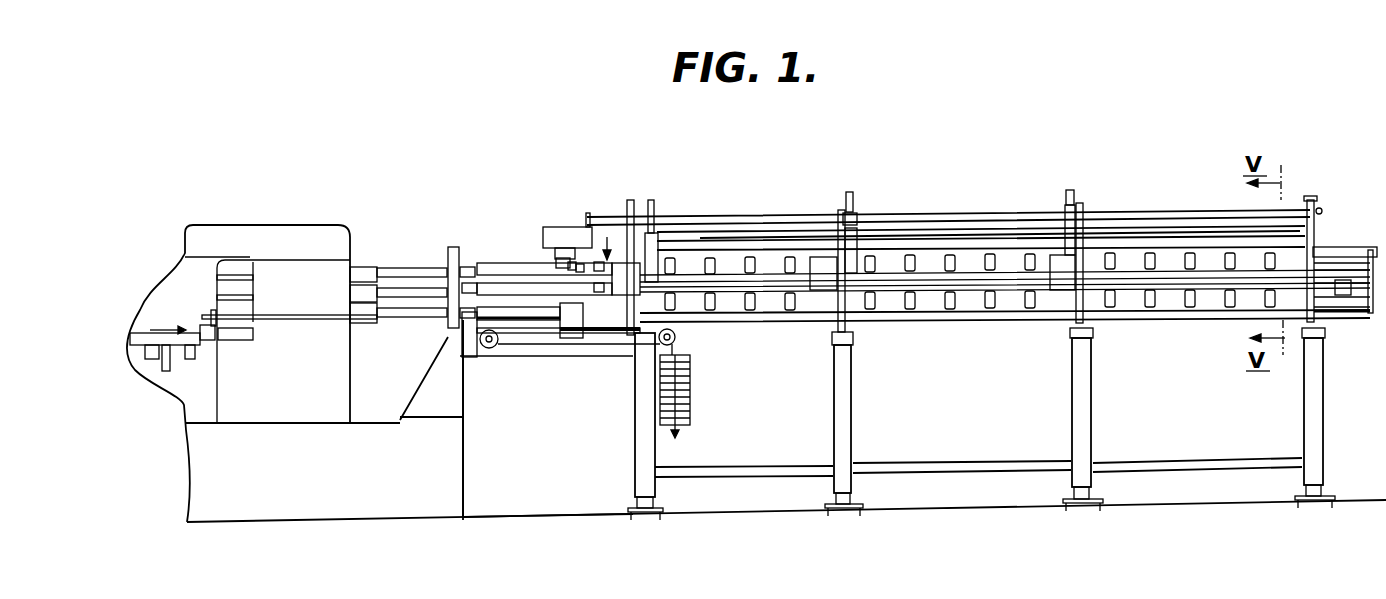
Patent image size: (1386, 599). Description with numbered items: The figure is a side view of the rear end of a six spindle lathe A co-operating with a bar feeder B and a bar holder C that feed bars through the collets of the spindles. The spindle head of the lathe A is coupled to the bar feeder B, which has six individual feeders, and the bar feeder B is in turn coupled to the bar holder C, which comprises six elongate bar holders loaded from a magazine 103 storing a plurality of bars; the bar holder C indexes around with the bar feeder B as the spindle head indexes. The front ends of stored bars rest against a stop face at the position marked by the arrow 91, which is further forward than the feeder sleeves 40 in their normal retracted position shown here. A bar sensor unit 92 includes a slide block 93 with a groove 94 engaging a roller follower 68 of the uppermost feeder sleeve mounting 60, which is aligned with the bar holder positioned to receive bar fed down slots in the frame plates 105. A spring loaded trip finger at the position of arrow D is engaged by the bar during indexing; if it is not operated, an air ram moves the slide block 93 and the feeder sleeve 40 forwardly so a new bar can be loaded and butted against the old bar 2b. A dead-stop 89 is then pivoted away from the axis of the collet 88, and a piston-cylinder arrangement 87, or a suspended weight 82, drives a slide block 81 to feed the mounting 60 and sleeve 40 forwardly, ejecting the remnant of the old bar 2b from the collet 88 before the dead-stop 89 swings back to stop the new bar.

The six spindle lathe A is at (306, 208).
The bar feeder B is at (549, 203).
The bar holder C is at (1000, 208).
The trip finger position D is at (607, 236).
The old bar 2b is at (293, 316).
The feeder sleeve 40 is at (600, 262).
The feeder sleeve mounting 60 is at (566, 267).
The roller follower 68 is at (572, 262).
The slide block 81 is at (572, 338).
The suspended weight 82 is at (690, 412).
The piston-cylinder arrangement 87 is at (604, 332).
The collet 88 is at (256, 328).
The dead-stop 89 is at (213, 316).
The bar front end position 91 is at (588, 213).
The bar sensor unit 92 is at (583, 228).
The slide block 93 is at (560, 259).
The groove 94 is at (620, 278).
The magazine 103 is at (1168, 232).
The frame plates 105 is at (1079, 227).